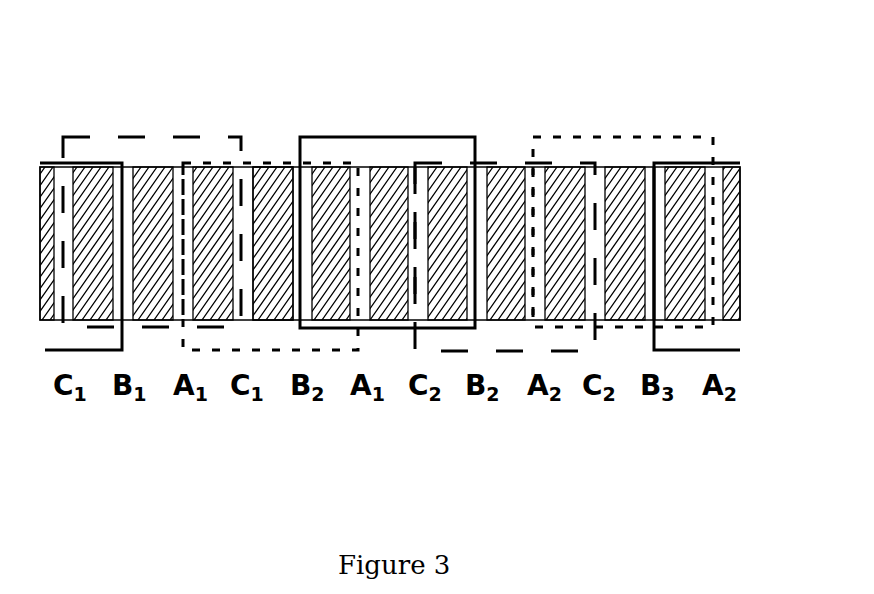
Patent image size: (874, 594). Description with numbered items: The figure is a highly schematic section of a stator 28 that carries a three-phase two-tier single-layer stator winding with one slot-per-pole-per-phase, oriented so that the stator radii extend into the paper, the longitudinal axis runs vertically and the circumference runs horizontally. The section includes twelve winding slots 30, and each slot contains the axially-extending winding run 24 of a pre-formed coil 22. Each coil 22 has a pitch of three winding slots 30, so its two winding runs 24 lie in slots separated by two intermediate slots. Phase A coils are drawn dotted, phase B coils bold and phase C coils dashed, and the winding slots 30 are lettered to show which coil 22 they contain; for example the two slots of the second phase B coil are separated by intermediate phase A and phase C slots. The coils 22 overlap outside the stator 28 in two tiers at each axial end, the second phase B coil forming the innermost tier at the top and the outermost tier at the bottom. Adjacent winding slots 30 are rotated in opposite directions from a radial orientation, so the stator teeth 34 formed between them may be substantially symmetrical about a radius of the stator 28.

The pre-formed coil 22 is at (179, 119).
The winding run 24 is at (180, 233).
The stator 28 is at (758, 232).
The winding slot 30 is at (530, 227).
The stator tooth 34 is at (267, 190).